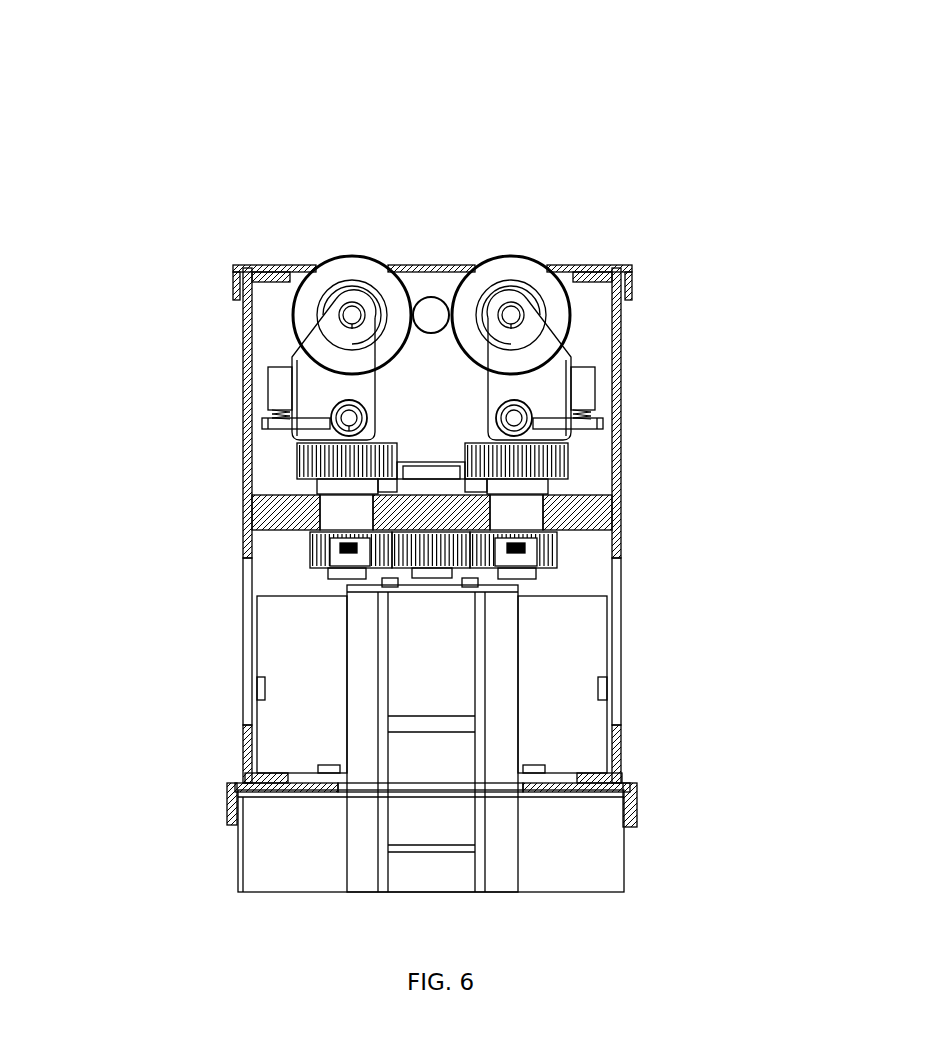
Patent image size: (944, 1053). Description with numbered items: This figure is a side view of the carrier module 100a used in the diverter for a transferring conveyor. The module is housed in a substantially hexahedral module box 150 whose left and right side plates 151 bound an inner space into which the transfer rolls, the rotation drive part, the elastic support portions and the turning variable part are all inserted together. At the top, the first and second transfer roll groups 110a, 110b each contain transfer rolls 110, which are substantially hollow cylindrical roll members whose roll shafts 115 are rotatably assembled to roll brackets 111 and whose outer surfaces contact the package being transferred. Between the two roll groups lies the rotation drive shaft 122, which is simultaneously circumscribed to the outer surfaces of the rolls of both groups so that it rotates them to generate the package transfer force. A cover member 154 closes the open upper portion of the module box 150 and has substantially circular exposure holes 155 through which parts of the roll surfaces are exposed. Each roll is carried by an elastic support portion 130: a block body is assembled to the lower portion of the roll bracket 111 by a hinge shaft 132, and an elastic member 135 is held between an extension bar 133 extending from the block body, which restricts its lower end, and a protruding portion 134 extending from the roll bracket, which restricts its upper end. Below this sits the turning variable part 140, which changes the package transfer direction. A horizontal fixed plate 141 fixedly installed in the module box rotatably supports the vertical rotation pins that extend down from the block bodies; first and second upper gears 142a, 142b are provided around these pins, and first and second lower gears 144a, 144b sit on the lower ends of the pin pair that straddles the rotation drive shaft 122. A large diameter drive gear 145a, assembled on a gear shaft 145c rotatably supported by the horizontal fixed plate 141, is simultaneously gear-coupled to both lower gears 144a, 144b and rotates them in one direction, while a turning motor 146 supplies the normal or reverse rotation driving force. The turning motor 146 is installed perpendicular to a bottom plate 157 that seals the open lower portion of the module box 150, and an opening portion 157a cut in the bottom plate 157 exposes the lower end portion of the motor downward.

The carrier module 100a is at (426, 128).
The transfer roll 110 is at (341, 283).
The first transfer roll group 110a is at (352, 235).
The second transfer roll group 110b is at (514, 230).
The roll bracket 111 is at (318, 357).
The roll shaft 115 is at (338, 300).
The rotation drive shaft 122 is at (430, 266).
The elastic support portion 130 is at (120, 405).
The hinge shaft 132 is at (360, 412).
The extension bar 133 is at (282, 423).
The protruding portion 134 is at (270, 376).
The elastic member 135 is at (272, 416).
The turning variable part 140 is at (722, 645).
The horizontal fixed plate 141 is at (593, 510).
The first upper gear 142a is at (308, 460).
The second upper gear 142b is at (562, 460).
The first lower gear 144a is at (318, 552).
The second lower gear 144b is at (547, 552).
The large diameter drive gear 145a is at (460, 582).
The gear shaft 145c is at (432, 466).
The turning motor 146 is at (457, 673).
The module box 150 is at (654, 369).
The side plate 151 is at (621, 328).
The cover member 154 is at (597, 266).
The exposure hole 155 is at (405, 266).
The bottom plate 157 is at (633, 790).
The opening portion 157a is at (512, 793).